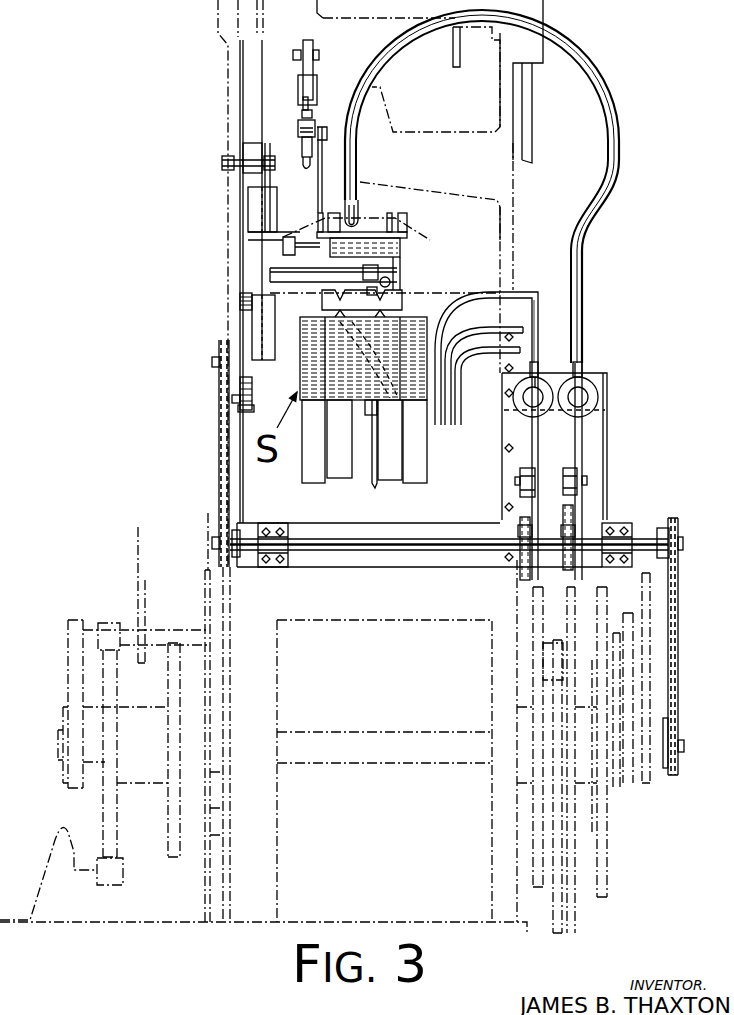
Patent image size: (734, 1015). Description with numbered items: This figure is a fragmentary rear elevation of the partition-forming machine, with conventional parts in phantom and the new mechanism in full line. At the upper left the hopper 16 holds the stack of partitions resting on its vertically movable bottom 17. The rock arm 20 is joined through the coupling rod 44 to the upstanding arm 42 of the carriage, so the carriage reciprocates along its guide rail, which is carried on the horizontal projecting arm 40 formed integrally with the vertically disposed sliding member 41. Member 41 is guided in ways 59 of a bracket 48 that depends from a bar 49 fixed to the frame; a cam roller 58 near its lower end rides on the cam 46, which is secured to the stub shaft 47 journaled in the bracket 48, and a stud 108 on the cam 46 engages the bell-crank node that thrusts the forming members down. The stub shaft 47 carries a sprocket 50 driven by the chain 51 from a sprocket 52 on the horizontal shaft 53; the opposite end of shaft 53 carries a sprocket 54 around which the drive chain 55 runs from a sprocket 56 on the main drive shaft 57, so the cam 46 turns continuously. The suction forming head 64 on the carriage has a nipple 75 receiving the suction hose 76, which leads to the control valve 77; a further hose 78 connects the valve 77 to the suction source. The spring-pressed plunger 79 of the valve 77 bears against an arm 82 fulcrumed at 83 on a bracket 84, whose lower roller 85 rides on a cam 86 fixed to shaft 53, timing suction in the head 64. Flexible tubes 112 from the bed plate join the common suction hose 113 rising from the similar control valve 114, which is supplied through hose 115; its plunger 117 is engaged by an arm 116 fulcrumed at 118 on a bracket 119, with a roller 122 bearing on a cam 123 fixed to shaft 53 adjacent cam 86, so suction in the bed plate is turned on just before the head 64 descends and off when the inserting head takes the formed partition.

The hopper 16 is at (412, 462).
The bottom 17 is at (347, 400).
The rock arm 20 is at (304, 80).
The horizontal projecting arm 40 is at (336, 272).
The sliding member 41 is at (262, 145).
The upstanding arm 42 is at (318, 186).
The coupling rod 44 is at (305, 106).
The cam 46 is at (252, 408).
The stub shaft 47 is at (248, 382).
The bracket 48 is at (255, 272).
The bar 49 is at (245, 150).
The sprocket 50 is at (218, 350).
The driven chain 51 is at (221, 438).
The sprocket 52 is at (220, 532).
The shaft 53 is at (406, 545).
The sprocket 54 is at (676, 532).
The drive chain 55 is at (679, 630).
The sprocket 56 is at (680, 728).
The main drive shaft 57 is at (684, 746).
The cam roller 58 is at (245, 298).
The ways 59 is at (258, 324).
The forming head 64 is at (372, 292).
The nipple 75 is at (354, 215).
The suction hose 76 is at (577, 258).
The control valve 77 is at (590, 397).
The hose 78 is at (578, 366).
The plunger 79 is at (586, 402).
The arm 82 is at (580, 452).
The fulcrum 83 is at (588, 481).
The bracket 84 is at (575, 486).
The roller 85 is at (570, 550).
The cam 86 is at (566, 526).
The stud 108 is at (236, 399).
The flexible tubes 112 is at (490, 347).
The common suction hose 113 is at (533, 312).
The control valve 114 is at (545, 388).
The hose 115 is at (530, 376).
The arm 116 is at (535, 431).
The plunger 117 is at (545, 410).
The fulcrum 118 is at (516, 481).
The bracket 119 is at (525, 470).
The roller 122 is at (523, 526).
The cam 123 is at (521, 565).